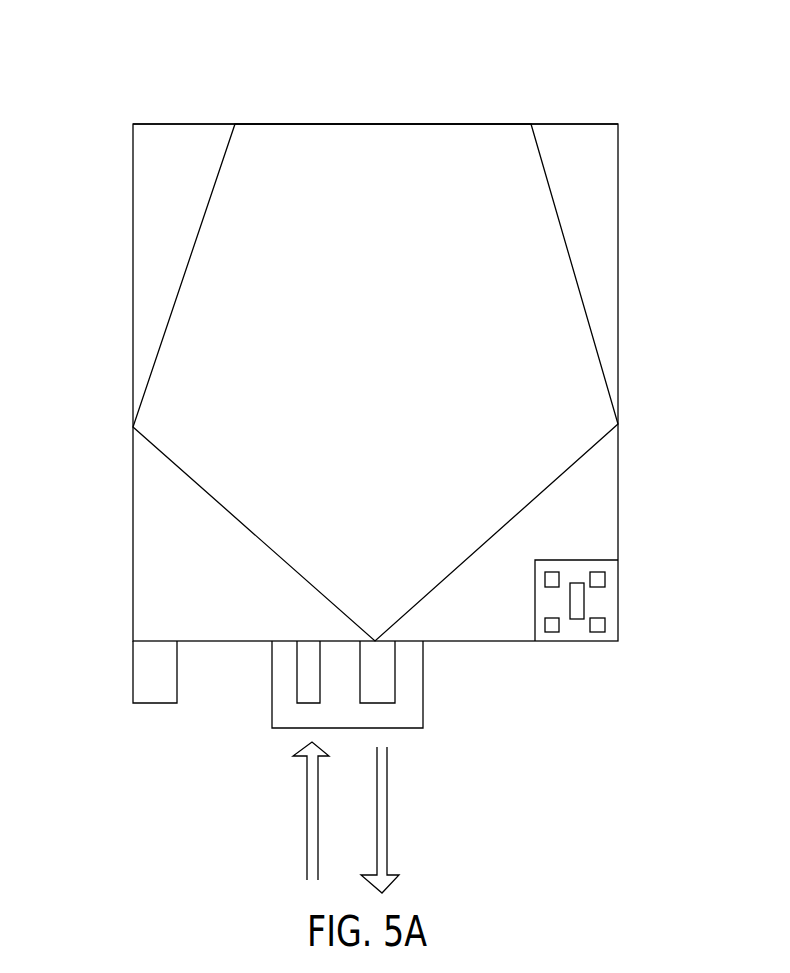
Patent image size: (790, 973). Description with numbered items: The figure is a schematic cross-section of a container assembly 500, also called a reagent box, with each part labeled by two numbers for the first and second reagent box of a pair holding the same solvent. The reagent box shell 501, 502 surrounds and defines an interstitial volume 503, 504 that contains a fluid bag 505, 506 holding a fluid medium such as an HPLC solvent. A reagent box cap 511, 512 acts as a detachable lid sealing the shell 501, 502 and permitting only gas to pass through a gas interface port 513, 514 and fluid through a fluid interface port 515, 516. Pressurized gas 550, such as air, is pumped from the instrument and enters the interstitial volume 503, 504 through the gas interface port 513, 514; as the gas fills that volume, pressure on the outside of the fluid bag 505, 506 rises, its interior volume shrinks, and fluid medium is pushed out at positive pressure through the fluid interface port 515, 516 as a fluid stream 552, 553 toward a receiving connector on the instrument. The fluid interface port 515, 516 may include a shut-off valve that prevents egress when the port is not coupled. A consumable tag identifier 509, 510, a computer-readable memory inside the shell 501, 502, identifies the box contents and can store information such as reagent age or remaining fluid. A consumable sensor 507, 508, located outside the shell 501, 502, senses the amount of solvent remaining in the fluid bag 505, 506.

The container assembly 500 is at (368, 367).
The reagent box shell 501 is at (331, 382).
The reagent box shell 502 is at (133, 322).
The interstitial volume 503 is at (340, 168).
The interstitial volume 504 is at (152, 185).
The fluid bag 505 is at (375, 366).
The fluid bag 506 is at (303, 142).
The consumable sensor 507 is at (111, 674).
The consumable sensor 508 is at (133, 681).
The consumable tag identifier 509 is at (613, 600).
The consumable tag identifier 510 is at (603, 600).
The reagent box cap 511 is at (392, 684).
The reagent box cap 512 is at (425, 658).
The gas interface port 513 is at (264, 672).
The gas interface port 514 is at (297, 676).
The fluid interface port 515 is at (422, 682).
The fluid interface port 516 is at (395, 698).
The pressurized gas 550 is at (307, 850).
The fluid stream 552 is at (418, 820).
The fluid stream 553 is at (388, 850).